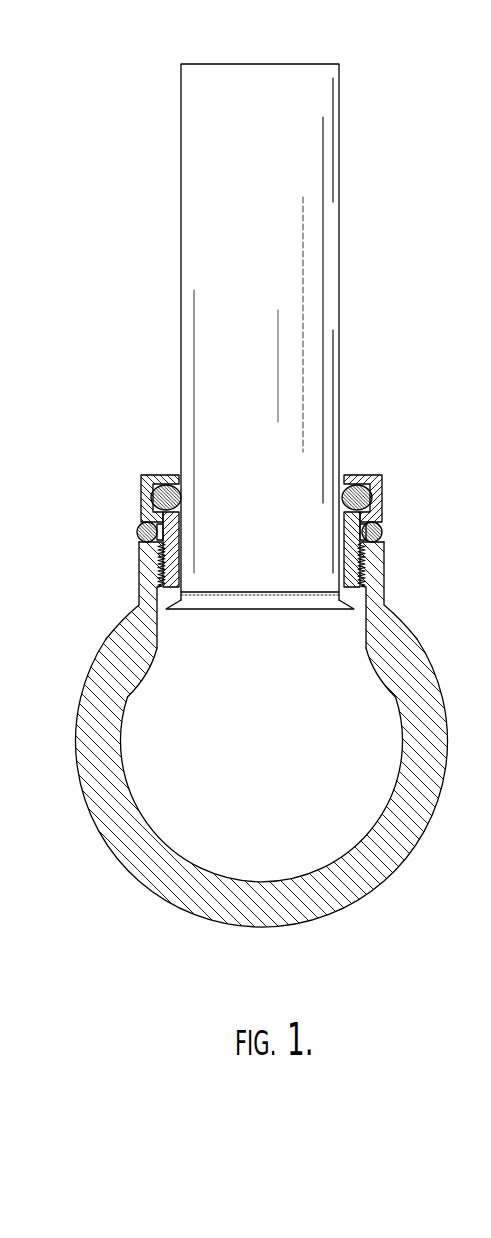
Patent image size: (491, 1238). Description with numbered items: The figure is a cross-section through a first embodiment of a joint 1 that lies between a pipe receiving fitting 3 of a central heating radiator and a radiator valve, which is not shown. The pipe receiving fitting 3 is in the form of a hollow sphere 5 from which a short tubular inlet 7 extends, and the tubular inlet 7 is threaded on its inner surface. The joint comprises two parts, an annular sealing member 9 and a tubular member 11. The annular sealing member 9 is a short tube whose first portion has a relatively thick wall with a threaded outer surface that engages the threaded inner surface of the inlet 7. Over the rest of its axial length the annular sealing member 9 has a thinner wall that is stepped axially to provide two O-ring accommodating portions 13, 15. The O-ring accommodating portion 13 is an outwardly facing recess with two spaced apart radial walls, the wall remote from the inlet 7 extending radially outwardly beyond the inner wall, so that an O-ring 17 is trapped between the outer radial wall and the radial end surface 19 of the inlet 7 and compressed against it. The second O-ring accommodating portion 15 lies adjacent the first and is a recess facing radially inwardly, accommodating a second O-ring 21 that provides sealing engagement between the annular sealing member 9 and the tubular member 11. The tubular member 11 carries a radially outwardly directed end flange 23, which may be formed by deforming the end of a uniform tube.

The joint 1 is at (112, 542).
The pipe receiving fitting 3 is at (348, 885).
The hollow sphere 5 is at (175, 880).
The tubular inlet 7 is at (372, 583).
The annular sealing member 9 is at (152, 501).
The tubular member 11 is at (355, 567).
The O-ring accommodating portion 13 is at (357, 524).
The second O-ring accommodating portion 15 is at (372, 487).
The O-ring 17 is at (383, 530).
The radial end surface 19 is at (375, 542).
The second O-ring 21 is at (355, 495).
The end flange 23 is at (186, 598).